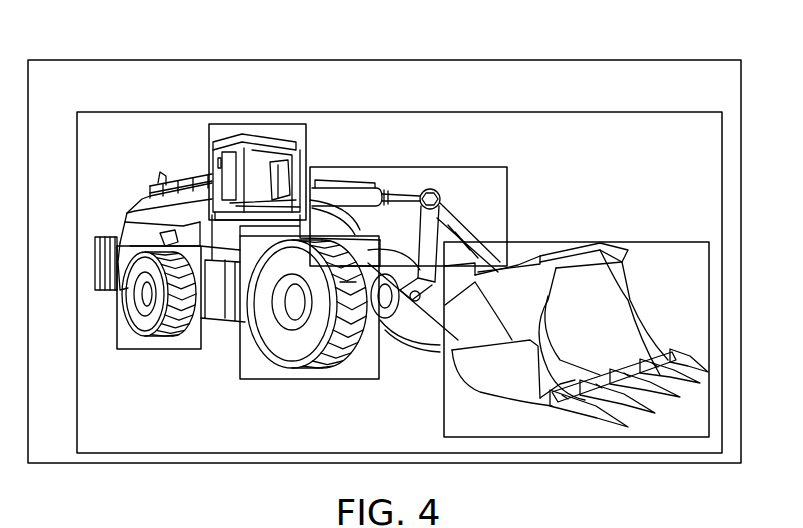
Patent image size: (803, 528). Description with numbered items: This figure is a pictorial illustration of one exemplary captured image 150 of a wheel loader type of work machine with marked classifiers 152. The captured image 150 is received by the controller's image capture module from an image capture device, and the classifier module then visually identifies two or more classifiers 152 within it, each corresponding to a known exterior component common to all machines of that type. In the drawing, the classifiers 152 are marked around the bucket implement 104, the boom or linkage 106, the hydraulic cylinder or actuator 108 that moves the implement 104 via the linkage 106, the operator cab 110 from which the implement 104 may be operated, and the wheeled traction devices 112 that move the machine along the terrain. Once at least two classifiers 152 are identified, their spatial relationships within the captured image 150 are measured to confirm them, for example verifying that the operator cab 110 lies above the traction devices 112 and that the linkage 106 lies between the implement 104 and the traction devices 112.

The captured image 150 is at (603, 60).
The classifier 152 is at (122, 192).
The operator cab 110 is at (268, 143).
The linkage 106 is at (360, 197).
The actuator 108 is at (450, 192).
The implement 104 is at (568, 285).
The traction device 112 is at (273, 362).